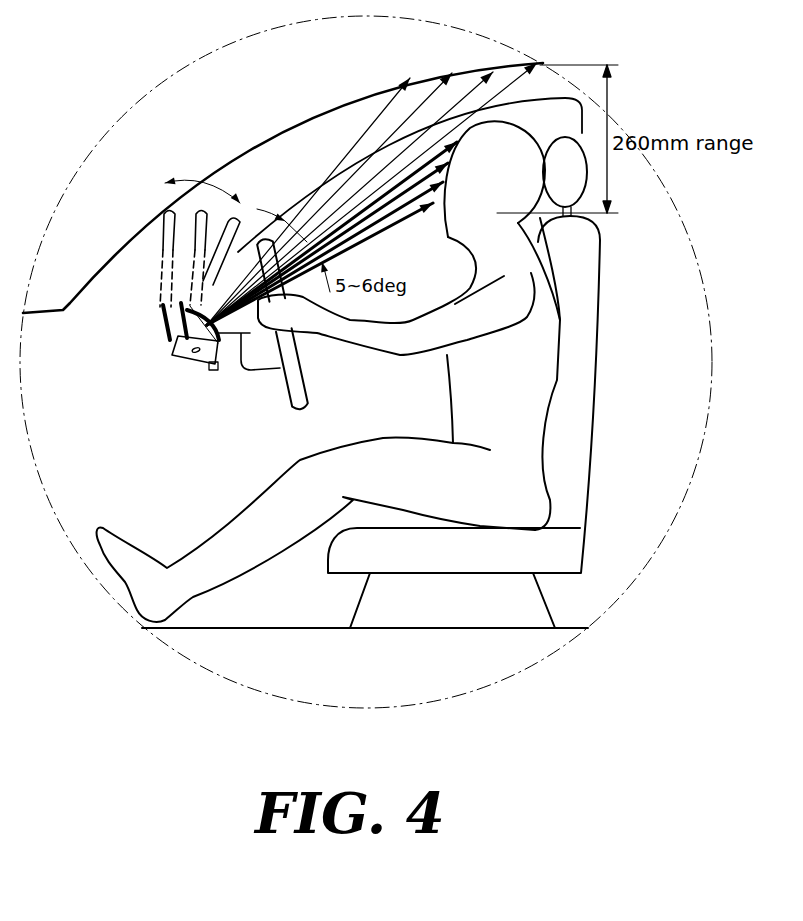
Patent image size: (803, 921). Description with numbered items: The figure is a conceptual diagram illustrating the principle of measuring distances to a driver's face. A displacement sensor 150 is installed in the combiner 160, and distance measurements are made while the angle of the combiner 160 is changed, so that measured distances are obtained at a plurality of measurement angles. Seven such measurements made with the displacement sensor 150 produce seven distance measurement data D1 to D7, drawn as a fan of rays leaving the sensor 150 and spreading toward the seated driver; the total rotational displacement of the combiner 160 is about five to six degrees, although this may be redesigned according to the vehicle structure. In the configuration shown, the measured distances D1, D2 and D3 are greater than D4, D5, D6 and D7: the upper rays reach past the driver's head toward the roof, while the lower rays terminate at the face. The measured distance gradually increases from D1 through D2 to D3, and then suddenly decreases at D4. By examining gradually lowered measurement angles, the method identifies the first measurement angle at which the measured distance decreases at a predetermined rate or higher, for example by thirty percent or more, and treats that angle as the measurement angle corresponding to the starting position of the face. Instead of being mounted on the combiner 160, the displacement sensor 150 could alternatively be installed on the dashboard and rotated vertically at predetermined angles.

The displacement sensor 150 is at (224, 342).
The combiner 160 is at (235, 250).
The distance measurement data D1 is at (327, 174).
The distance measurement data D2 is at (348, 174).
The distance measurement data D3 is at (372, 174).
The distance measurement data D4 is at (361, 224).
The distance measurement data D5 is at (358, 236).
The distance measurement data D6 is at (357, 248).
The distance measurement data D7 is at (357, 259).